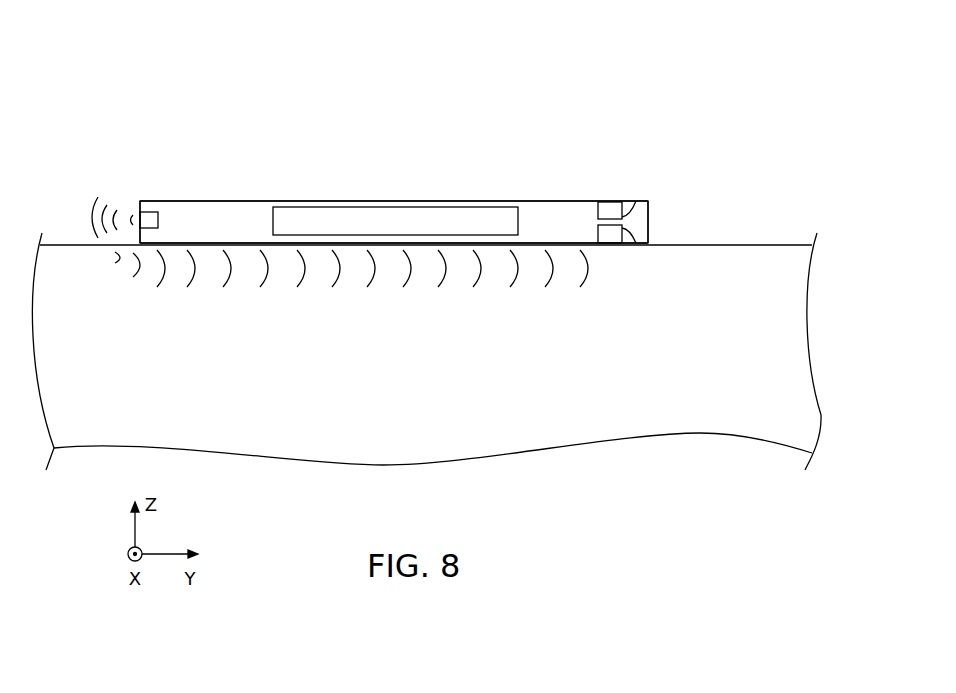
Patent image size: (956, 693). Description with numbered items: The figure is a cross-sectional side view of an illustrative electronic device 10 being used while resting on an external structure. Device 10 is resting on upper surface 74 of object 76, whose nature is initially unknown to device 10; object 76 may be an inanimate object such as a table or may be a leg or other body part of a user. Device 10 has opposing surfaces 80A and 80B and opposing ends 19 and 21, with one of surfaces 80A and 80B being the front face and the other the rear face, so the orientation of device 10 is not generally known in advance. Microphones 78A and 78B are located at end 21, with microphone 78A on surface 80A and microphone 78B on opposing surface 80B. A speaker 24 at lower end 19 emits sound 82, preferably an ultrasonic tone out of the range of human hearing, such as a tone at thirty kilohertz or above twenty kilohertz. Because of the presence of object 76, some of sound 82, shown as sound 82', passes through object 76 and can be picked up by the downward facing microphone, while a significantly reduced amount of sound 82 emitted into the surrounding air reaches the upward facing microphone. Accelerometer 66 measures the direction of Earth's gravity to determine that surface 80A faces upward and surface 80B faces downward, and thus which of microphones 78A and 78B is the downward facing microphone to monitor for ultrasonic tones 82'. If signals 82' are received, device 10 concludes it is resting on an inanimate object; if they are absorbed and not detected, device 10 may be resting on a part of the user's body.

The electronic device 10 is at (606, 52).
The lower end 19 is at (147, 140).
The end 21 is at (640, 138).
The speaker 24 is at (150, 212).
The accelerometer 66 is at (343, 207).
The upper surface 74 is at (694, 245).
The object 76 is at (753, 260).
The microphone 78A is at (631, 202).
The microphone 78B is at (632, 244).
The surface 80A is at (527, 201).
The opposing surface 80B is at (567, 243).
The sound 82 is at (113, 198).
The sound 82' is at (351, 289).